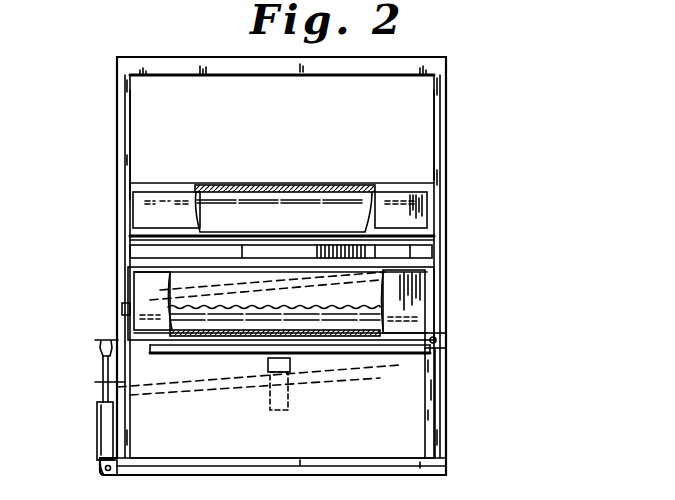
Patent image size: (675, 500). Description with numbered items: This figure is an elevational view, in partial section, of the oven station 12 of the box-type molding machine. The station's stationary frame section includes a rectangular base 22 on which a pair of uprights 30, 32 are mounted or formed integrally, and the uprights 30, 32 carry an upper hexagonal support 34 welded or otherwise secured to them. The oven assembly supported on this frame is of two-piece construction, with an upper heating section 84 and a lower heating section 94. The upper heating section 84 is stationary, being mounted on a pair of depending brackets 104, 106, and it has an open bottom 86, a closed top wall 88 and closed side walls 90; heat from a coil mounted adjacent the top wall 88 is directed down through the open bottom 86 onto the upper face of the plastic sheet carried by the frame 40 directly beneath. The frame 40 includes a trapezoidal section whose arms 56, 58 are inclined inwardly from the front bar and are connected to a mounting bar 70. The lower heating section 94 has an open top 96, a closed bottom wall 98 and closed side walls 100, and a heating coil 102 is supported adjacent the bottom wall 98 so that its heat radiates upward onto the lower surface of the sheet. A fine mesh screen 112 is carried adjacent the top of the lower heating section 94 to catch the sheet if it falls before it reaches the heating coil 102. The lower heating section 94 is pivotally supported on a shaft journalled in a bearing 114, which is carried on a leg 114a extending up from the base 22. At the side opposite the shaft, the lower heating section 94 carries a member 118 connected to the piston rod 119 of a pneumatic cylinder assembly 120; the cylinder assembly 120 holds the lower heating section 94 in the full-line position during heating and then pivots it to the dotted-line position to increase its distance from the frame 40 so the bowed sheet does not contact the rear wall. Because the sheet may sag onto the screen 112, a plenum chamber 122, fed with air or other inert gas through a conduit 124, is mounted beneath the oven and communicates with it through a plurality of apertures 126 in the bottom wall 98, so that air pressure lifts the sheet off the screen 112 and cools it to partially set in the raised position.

The oven station 12 is at (112, 84).
The upright 30 is at (118, 128).
The upright 32 is at (446, 98).
The upper hexagonal support 34 is at (418, 63).
The depending bracket 104 is at (135, 145).
The depending bracket 106 is at (434, 110).
The upper heating section 84 is at (315, 185).
The open bottom 86 is at (300, 186).
The top wall 88 is at (362, 190).
The side walls 90 is at (134, 208).
The mounting bar 70 is at (305, 247).
The arm 56 is at (140, 252).
The frame 40 is at (140, 250).
The arm 58 is at (420, 252).
The open top 96 is at (133, 268).
The lower heating section 94 is at (126, 293).
The side walls 100 is at (127, 310).
The fine mesh screen 112 is at (265, 302).
The apertures 126 is at (232, 310).
The heating coil 102 is at (343, 307).
The bottom wall 98 is at (244, 366).
The plenum chamber 122 is at (167, 364).
The conduit 124 is at (280, 394).
The bearing 114 is at (448, 344).
The leg 114a is at (436, 406).
The member 118 is at (97, 341).
The piston rod 119 is at (96, 382).
The pneumatic cylinder assembly 120 is at (100, 420).
The base 22 is at (345, 474).